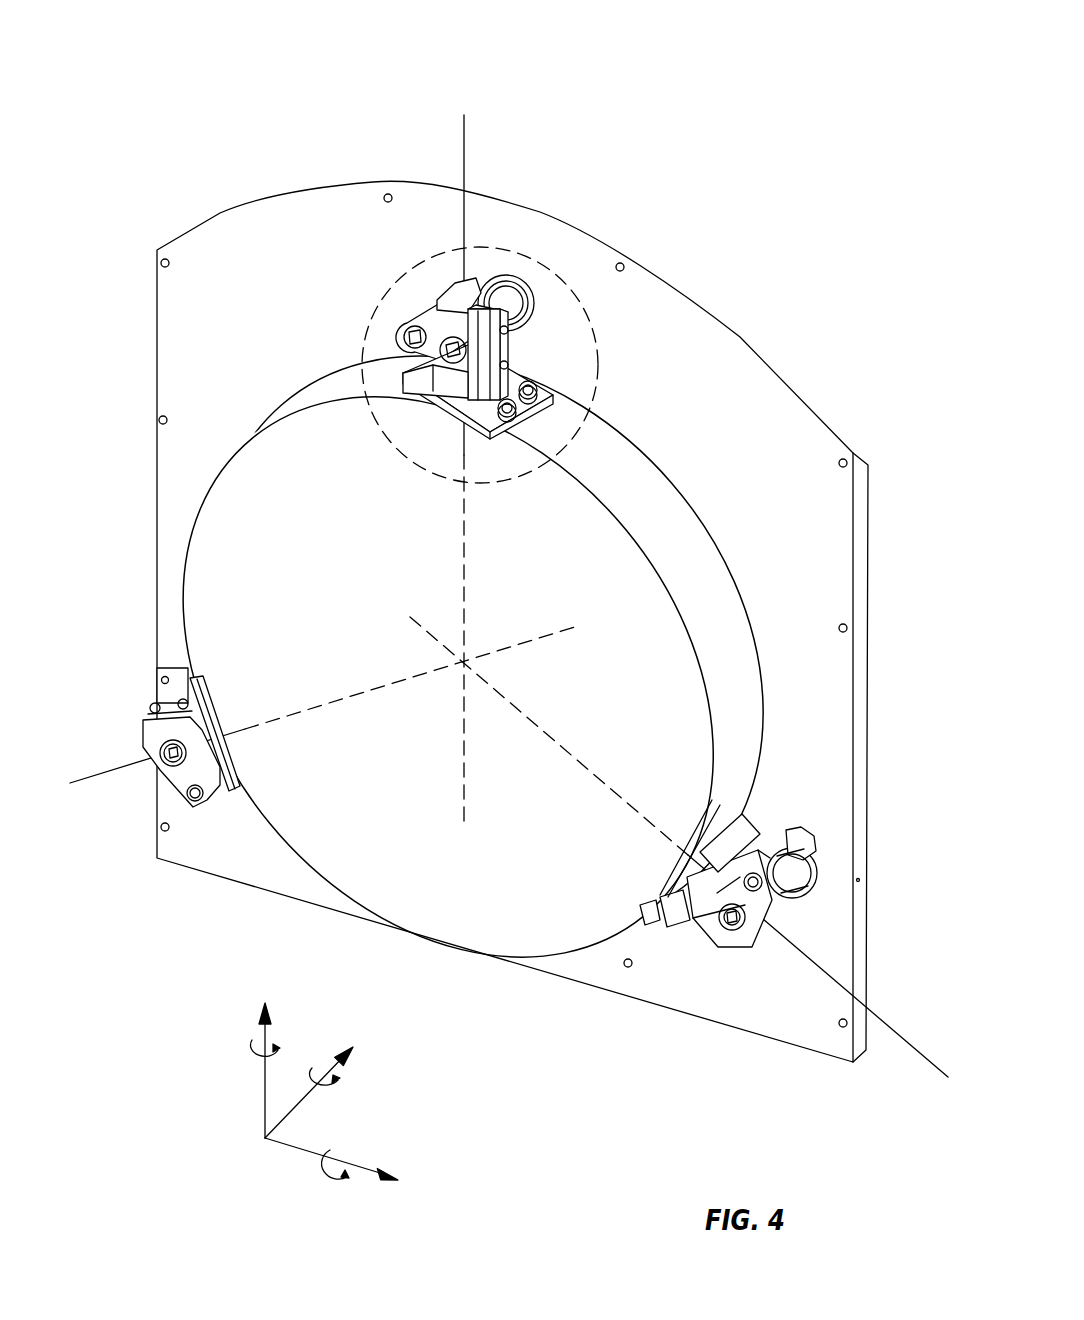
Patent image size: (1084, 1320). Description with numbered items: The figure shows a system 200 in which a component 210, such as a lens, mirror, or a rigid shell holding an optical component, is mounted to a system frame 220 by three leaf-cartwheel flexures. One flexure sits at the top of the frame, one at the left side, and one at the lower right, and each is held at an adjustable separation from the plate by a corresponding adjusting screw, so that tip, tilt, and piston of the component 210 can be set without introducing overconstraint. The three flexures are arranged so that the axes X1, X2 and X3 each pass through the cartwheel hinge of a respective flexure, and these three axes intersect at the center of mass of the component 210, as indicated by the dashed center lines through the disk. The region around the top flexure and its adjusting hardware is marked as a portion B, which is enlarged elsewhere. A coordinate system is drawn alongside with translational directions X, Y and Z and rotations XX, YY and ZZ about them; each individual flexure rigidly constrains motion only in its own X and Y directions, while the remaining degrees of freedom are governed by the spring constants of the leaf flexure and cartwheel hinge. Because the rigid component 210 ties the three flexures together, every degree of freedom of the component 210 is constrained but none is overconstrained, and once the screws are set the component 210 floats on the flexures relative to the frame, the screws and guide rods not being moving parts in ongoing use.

The system 200 is at (752, 59).
The system frame 220 is at (220, 230).
The component 210 is at (655, 515).
The axis X1 is at (462, 166).
The axis X2 is at (918, 1053).
The axis X3 is at (95, 777).
The portion B is at (538, 263).
The X direction X is at (331, 1159).
The Y direction Y is at (255, 1069).
The Z direction Z is at (317, 1092).
The rotation about X XX is at (330, 1176).
The rotation about Y YY is at (252, 1050).
The rotation about Z ZZ is at (338, 1090).